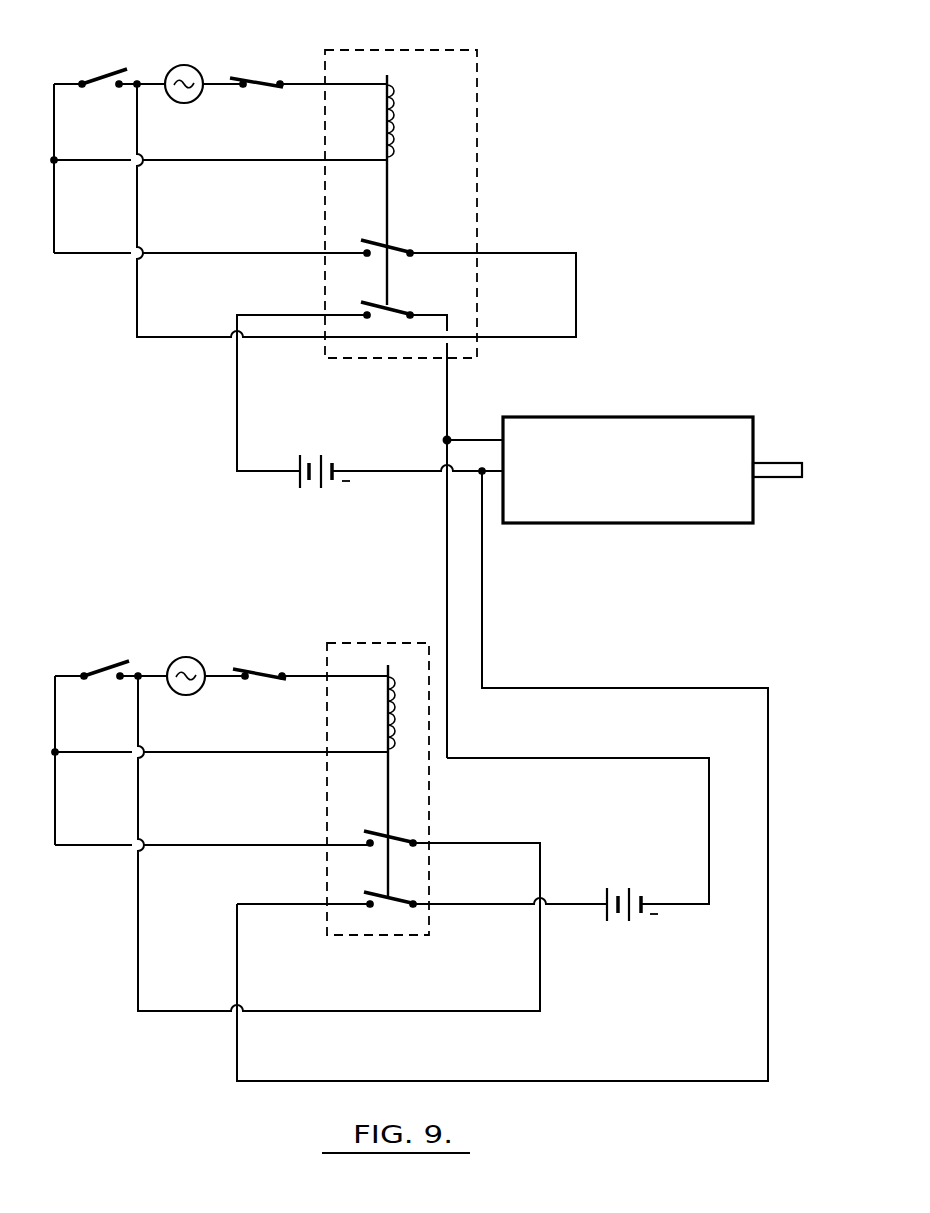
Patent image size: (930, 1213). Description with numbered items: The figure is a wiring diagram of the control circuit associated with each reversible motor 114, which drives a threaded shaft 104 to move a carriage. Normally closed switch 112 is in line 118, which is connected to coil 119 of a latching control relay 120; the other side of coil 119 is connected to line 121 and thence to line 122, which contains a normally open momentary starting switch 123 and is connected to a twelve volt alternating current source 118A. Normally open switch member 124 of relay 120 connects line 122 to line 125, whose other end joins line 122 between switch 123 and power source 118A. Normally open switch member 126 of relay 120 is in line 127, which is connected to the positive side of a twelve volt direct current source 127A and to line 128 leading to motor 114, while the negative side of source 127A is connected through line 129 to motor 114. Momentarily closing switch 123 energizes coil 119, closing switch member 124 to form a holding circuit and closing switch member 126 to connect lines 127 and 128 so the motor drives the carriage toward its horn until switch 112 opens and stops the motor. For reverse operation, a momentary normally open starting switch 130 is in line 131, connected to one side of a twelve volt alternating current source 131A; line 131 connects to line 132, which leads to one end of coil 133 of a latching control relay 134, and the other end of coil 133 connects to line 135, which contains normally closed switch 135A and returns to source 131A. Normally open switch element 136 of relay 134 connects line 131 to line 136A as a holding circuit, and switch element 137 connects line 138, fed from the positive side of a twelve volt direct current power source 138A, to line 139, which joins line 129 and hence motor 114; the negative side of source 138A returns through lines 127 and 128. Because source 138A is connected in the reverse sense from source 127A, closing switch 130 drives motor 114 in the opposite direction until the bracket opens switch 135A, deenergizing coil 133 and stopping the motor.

The threaded shaft 104 is at (791, 479).
The normally closed switch 112 is at (254, 80).
The reversible motor 114 is at (657, 503).
The line 118 is at (224, 88).
The alternating current source 118A is at (180, 62).
The coil 119 is at (396, 118).
The latching control relay 120 is at (453, 49).
The line 121 is at (238, 162).
The line 122 is at (56, 213).
The normally open momentary starting switch 123 is at (110, 76).
The normally open switch member 124 is at (371, 240).
The line 125 is at (141, 213).
The normally open switch member 126 is at (372, 302).
The line 127 is at (237, 393).
The direct current source 127A is at (306, 490).
The line 128 is at (470, 438).
The line 129 is at (404, 473).
The momentary normally open starting switch 130 is at (110, 667).
The line 131 is at (58, 719).
The alternating current source 131A is at (186, 655).
The line 132 is at (240, 754).
The coil 133 is at (385, 722).
The latching control relay 134 is at (359, 642).
The line 135 is at (300, 680).
The normally closed switch 135A is at (258, 670).
The normally open switch element 136 is at (374, 830).
The line 136A is at (142, 801).
The switch element 137 is at (379, 893).
The line 138 is at (465, 903).
The direct current power source 138A is at (647, 921).
The line 139 is at (628, 687).